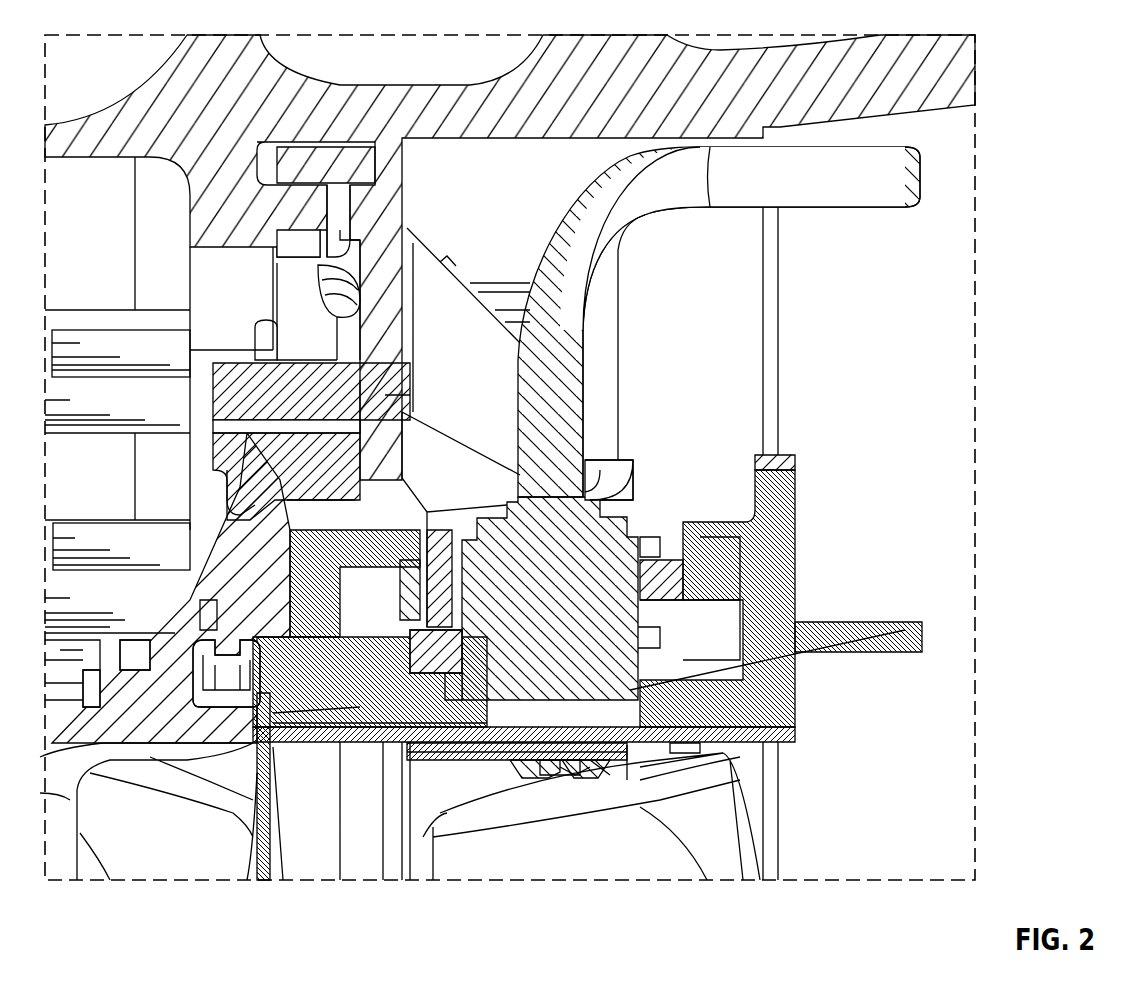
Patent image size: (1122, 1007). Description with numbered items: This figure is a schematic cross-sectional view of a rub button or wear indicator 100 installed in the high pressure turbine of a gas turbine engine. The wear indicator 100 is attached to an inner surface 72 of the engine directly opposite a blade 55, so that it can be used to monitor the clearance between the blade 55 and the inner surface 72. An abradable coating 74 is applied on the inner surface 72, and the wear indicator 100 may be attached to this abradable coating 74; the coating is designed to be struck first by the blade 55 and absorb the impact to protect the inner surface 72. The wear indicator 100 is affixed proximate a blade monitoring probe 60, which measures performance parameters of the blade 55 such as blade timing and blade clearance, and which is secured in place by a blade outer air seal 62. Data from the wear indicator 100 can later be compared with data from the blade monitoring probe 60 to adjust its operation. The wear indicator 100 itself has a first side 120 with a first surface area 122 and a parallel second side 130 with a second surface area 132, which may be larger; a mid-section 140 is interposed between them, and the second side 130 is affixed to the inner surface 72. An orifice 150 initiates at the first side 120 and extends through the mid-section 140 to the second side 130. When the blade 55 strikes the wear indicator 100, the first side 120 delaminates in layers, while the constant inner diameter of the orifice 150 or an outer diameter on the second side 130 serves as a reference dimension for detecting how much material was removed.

The blade 55 is at (738, 855).
The blade monitoring probe 60 is at (922, 632).
The blade outer air seal 62 is at (797, 697).
The inner surface 72 is at (412, 760).
The abradable coating 74 is at (635, 790).
The wear indicator 100 is at (513, 780).
The first side 120 is at (533, 780).
The first surface area 122 is at (560, 767).
The second side 130 is at (585, 762).
The second surface area 132 is at (528, 762).
The mid-section 140 is at (573, 780).
The orifice 150 is at (556, 760).